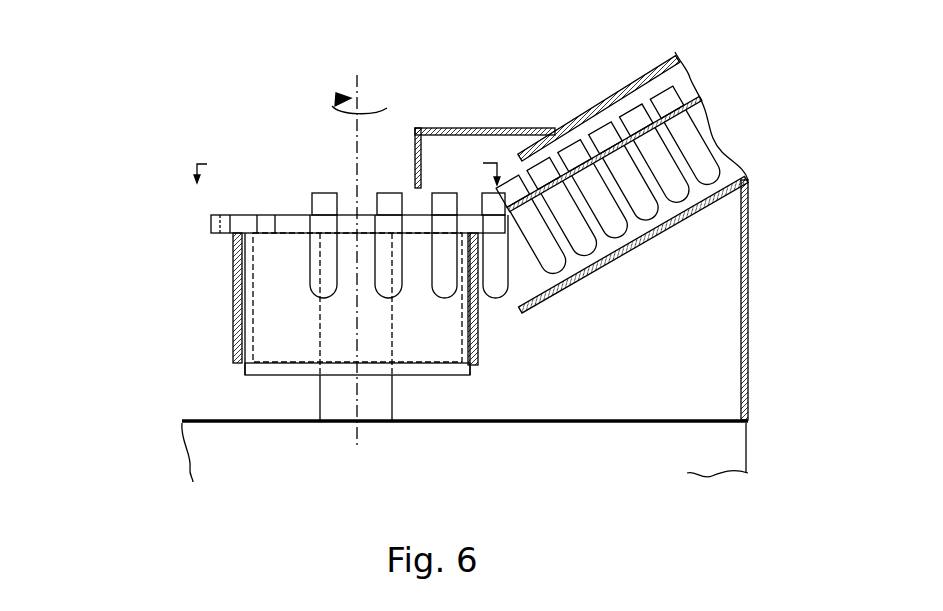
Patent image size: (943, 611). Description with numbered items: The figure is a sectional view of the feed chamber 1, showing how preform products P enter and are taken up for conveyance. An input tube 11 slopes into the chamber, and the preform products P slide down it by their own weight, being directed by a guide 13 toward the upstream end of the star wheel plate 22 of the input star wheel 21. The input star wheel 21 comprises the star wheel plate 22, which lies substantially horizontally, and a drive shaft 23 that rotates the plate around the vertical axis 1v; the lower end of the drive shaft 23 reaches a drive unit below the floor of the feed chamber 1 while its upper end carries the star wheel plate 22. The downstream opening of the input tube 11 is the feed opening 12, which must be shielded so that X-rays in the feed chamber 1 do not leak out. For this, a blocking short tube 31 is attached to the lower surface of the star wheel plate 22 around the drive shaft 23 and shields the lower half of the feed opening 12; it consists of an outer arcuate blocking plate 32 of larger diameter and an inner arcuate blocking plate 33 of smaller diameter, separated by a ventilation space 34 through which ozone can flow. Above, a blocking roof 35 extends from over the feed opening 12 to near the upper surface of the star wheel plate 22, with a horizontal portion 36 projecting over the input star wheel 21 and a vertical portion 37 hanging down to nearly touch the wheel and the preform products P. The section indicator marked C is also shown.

The feed chamber 1 is at (638, 378).
The vertical axis 1v is at (356, 80).
The input tube 11 is at (602, 98).
The feed opening 12 is at (507, 310).
The guide 13 is at (703, 113).
The input star wheel 21 is at (287, 257).
The star wheel plate 22 is at (296, 218).
The drive shaft 23 is at (385, 402).
The blocking short tube 31 is at (287, 345).
The outer arcuate blocking plate 32 is at (232, 300).
The inner arcuate blocking plate 33 is at (265, 375).
The ventilation space 34 is at (472, 365).
The blocking roof 35 is at (463, 101).
The horizontal portion 36 is at (478, 126).
The vertical portion 37 is at (403, 124).
The section line C is at (345, 160).
The preform products P is at (324, 300).